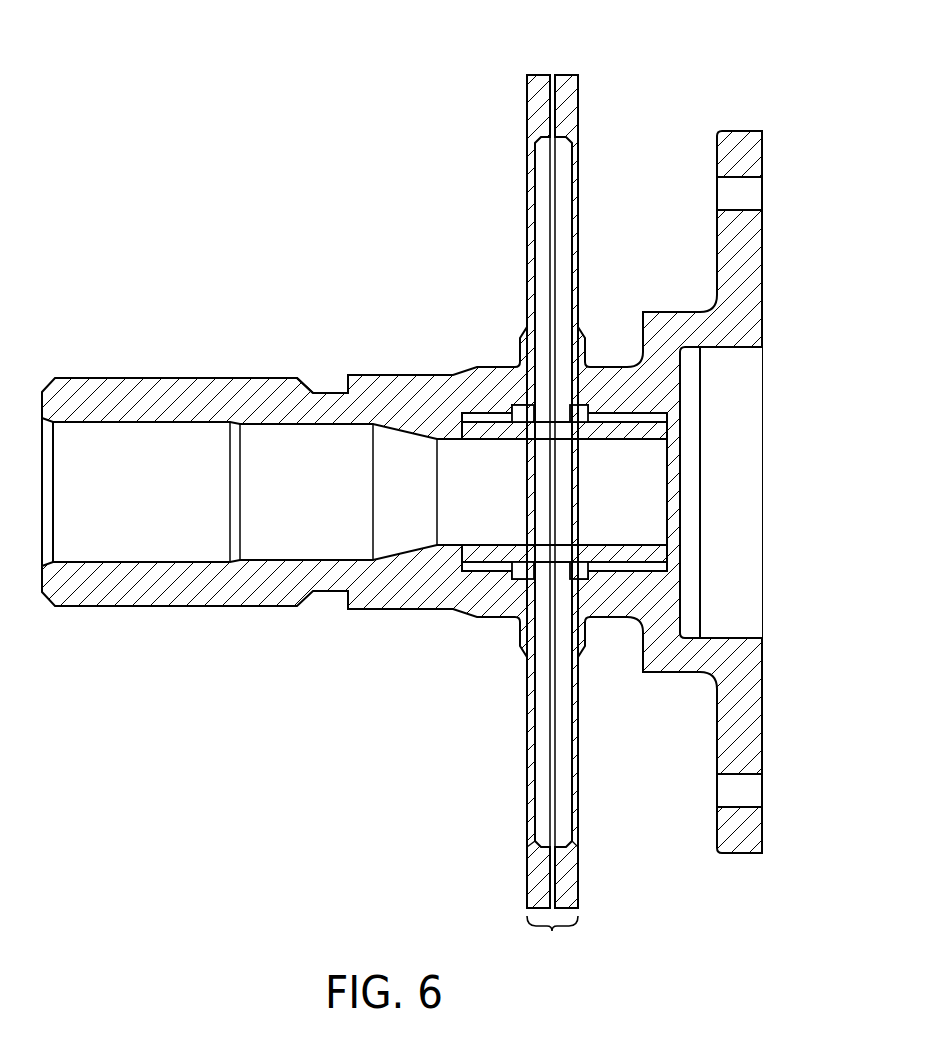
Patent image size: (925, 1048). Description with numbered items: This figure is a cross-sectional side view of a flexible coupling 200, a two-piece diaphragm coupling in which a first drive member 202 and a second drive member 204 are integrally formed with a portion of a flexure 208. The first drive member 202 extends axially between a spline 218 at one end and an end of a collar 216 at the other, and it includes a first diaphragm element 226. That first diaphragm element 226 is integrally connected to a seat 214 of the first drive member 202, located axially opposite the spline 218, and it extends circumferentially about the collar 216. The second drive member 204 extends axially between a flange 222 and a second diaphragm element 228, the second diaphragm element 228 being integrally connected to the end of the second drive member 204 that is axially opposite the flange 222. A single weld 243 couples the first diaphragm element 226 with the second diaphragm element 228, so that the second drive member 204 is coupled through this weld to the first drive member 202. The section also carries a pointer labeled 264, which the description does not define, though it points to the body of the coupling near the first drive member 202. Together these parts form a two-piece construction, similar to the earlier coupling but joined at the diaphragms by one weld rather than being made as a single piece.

The flexible coupling 200 is at (439, 501).
The first drive member 202 is at (108, 656).
The second drive member 204 is at (596, 744).
The flexure 208 is at (552, 940).
The seat 214 is at (498, 598).
The collar 216 is at (520, 550).
The spline 218 is at (153, 378).
The flange 222 is at (742, 828).
The first diaphragm element 226 is at (508, 794).
The second diaphragm element 228 is at (603, 708).
The single weld 243 is at (563, 93).
The body bottom 264 is at (380, 650).